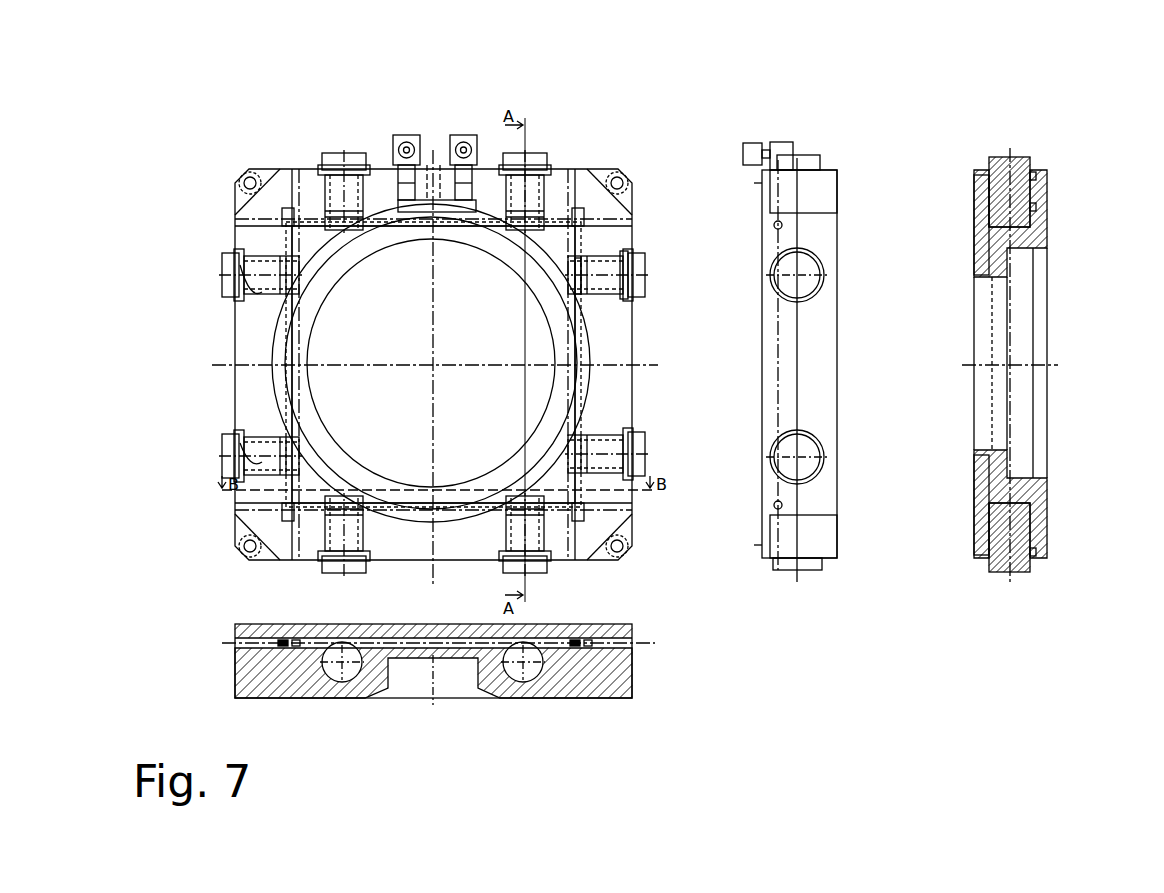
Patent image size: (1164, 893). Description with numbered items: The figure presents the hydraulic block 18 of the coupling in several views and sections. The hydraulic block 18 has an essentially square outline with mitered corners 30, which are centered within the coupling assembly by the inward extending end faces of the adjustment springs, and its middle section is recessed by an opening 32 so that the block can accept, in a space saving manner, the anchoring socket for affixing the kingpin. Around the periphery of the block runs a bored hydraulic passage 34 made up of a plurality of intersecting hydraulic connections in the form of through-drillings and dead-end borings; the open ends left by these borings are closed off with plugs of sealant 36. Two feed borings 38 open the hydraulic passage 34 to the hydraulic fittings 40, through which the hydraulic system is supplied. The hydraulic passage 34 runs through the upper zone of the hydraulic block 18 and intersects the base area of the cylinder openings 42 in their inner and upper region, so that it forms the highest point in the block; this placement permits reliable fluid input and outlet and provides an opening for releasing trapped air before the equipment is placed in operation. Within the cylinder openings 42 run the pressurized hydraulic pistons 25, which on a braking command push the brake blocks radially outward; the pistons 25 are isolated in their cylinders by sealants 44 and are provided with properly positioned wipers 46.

The hydraulic block 18 is at (258, 148).
The hydraulic pistons 25 is at (323, 150).
The mitered corners 30 is at (590, 200).
The opening 32 is at (387, 200).
The hydraulic passage 34 is at (290, 238).
The plugs of sealant 36 is at (597, 222).
The feed borings 38 is at (397, 340).
The hydraulic fittings 40 is at (472, 135).
The cylinder openings 42 is at (242, 292).
The sealants 44 is at (588, 298).
The wipers 46 is at (628, 300).